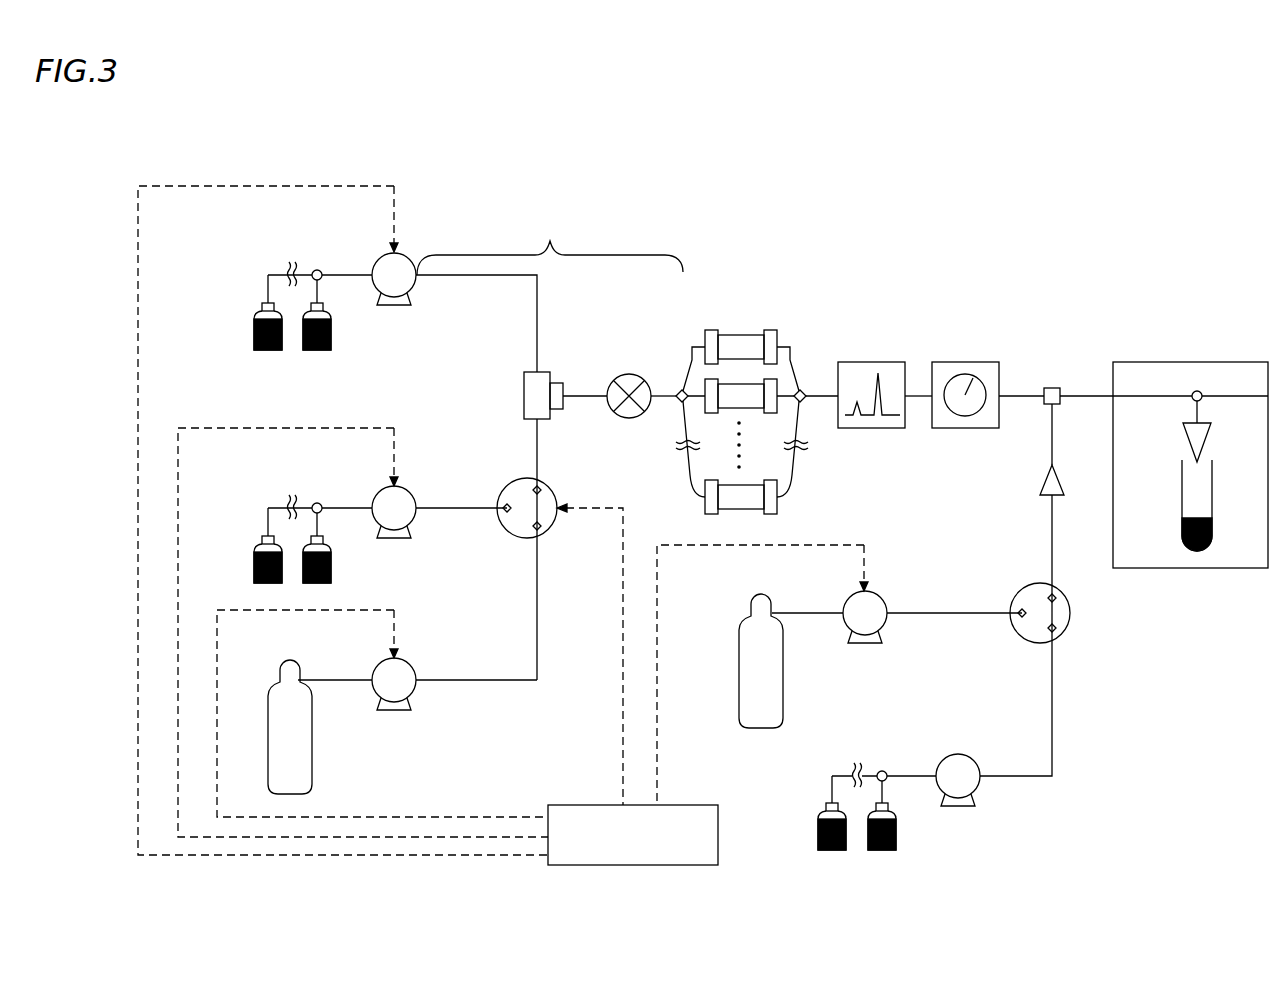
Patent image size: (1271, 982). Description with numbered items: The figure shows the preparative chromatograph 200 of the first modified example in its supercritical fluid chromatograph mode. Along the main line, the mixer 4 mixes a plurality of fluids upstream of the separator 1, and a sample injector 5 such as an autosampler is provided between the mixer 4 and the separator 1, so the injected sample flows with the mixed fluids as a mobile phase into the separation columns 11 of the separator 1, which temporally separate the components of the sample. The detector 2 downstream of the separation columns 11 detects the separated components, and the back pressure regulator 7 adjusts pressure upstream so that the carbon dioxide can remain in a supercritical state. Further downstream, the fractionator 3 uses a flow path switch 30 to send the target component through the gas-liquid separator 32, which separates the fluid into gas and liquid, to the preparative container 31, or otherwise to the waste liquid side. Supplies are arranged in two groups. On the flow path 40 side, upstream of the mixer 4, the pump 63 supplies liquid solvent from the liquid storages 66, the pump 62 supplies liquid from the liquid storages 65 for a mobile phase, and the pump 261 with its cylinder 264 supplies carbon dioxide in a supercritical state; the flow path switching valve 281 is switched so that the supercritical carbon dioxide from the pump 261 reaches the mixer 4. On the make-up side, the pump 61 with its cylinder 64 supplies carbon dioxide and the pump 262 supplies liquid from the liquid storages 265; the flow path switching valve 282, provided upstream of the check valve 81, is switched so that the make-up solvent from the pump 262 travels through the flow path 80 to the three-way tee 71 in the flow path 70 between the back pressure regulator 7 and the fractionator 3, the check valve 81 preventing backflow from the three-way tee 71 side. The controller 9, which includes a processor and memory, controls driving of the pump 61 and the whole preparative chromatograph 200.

The preparative chromatograph 200 is at (197, 151).
The pump 63 is at (374, 262).
The liquid storages 66 is at (249, 322).
The flow path 40 is at (550, 244).
The mixer 4 is at (553, 372).
The sample injector 5 is at (636, 378).
The separation columns 11 is at (745, 331).
The separator 1 is at (757, 396).
The detector 2 is at (881, 362).
The back pressure regulator 7 is at (976, 362).
The three-way tee 71 is at (1057, 387).
The flow path 70 is at (1088, 393).
The fractionator 3 is at (1216, 362).
The flow path switch 30 is at (1203, 393).
The gas-liquid separator 32 is at (1186, 438).
The preparative container 31 is at (1213, 478).
The check valve 81 is at (1040, 485).
The flow path 80 is at (1050, 532).
The pump 62 is at (410, 490).
The flow path switching valve 281 is at (503, 520).
The liquid storages 65 is at (341, 554).
The pump 261 is at (412, 663).
The cylinder 264 is at (313, 738).
The pump 61 is at (882, 596).
The cylinder 64 is at (784, 672).
The flow path switching valve 282 is at (1072, 620).
The pump 262 is at (980, 761).
The liquid storages 265 is at (908, 823).
The controller 9 is at (718, 823).